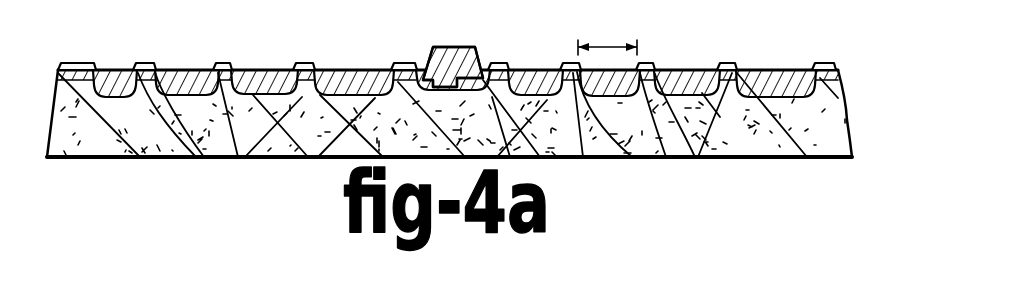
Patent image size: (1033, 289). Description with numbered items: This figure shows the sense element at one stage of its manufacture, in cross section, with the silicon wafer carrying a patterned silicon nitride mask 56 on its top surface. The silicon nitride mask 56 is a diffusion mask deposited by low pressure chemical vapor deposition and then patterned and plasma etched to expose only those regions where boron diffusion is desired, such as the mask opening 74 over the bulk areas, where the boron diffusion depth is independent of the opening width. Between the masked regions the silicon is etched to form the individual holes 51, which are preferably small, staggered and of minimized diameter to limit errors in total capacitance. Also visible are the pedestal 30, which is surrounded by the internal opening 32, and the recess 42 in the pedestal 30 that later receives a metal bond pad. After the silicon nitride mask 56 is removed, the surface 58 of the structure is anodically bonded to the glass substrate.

The pedestal 30 is at (438, 47).
The internal opening 32 is at (315, 158).
The recess 42 is at (481, 66).
The holes 51 is at (236, 158).
The silicon nitride mask 56 is at (398, 63).
The surface 58 is at (458, 53).
The mask opening 74 is at (604, 46).